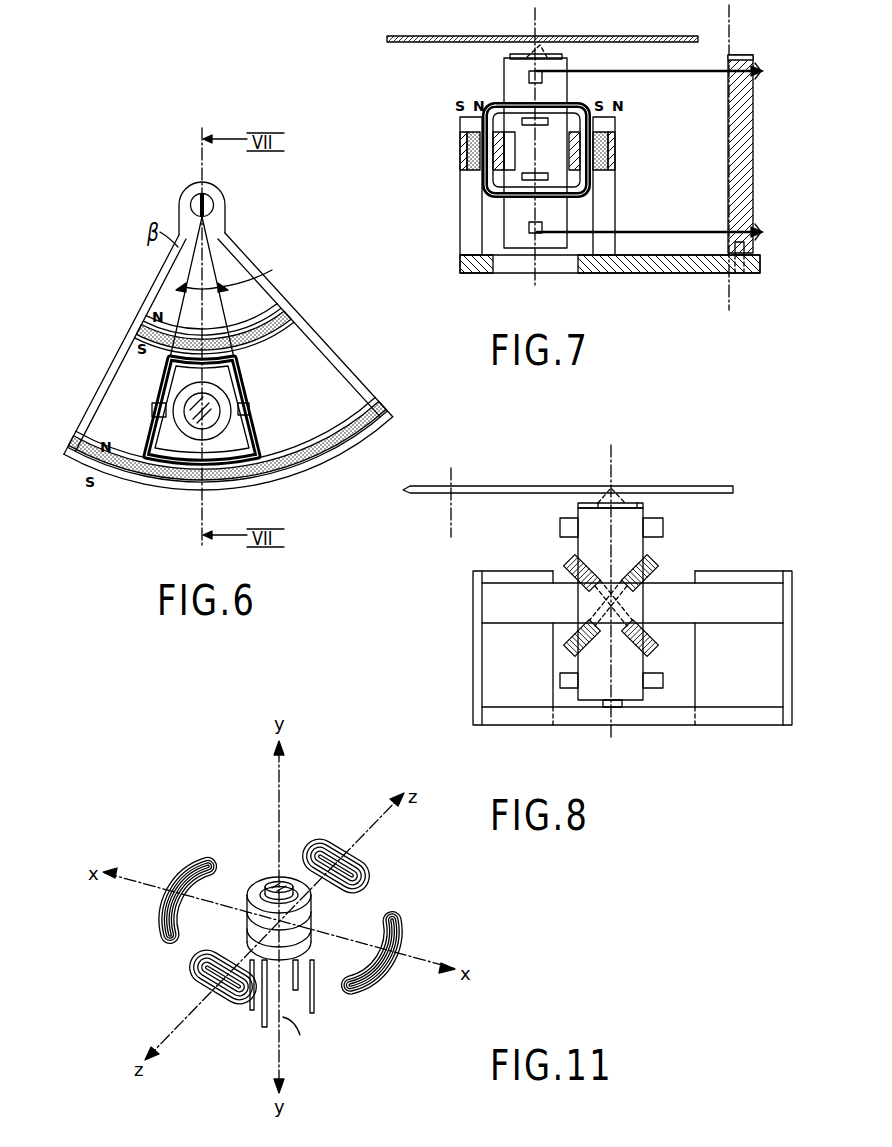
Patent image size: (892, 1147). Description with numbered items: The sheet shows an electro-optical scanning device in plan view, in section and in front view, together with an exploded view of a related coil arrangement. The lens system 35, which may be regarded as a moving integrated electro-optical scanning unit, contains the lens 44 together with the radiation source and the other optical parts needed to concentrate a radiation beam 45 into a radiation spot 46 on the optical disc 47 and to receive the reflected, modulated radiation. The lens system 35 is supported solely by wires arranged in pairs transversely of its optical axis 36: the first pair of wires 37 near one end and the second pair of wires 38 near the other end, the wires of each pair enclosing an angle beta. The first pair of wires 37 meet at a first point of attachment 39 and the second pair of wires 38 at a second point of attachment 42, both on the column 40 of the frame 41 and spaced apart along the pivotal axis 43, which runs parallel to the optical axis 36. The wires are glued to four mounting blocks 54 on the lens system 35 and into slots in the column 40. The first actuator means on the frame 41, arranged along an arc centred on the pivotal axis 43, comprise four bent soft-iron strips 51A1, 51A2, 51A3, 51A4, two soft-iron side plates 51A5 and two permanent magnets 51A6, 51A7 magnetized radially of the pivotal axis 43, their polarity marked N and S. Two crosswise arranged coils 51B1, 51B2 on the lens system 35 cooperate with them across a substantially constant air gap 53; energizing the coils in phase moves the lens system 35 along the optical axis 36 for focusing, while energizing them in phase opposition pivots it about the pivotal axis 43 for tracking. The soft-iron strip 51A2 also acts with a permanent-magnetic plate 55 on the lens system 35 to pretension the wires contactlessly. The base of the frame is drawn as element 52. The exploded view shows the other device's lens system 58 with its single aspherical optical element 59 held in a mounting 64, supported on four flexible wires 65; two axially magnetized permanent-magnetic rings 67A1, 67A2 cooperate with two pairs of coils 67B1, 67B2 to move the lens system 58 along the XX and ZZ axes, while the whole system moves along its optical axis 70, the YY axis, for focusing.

In FIG. 6, the lens system 35 is at (244, 466).
In FIG. 7, the lens system 35 is at (513, 71).
In FIG. 8, the lens system 35 is at (600, 543).
In FIG. 7, the optical axis 36 is at (540, 19).
In FIG. 8, the optical axis 36 is at (611, 458).
In FIG. 6, the first pair of wires 37 is at (253, 279).
In FIG. 7, the first pair of wires 37 is at (668, 76).
In FIG. 7, the second pair of wires 38 is at (657, 230).
In FIG. 6, the first point of attachment 39 is at (207, 221).
In FIG. 7, the first point of attachment 39 is at (729, 77).
In FIG. 6, the column 40 is at (208, 200).
In FIG. 7, the column 40 is at (744, 141).
In FIG. 8, the column 40 is at (608, 708).
In FIG. 6, the frame 41 is at (140, 299).
In FIG. 7, the frame 41 is at (749, 281).
In FIG. 8, the frame 41 is at (508, 733).
In FIG. 7, the second point of attachment 42 is at (728, 231).
In FIG. 7, the pivotal axis 43 is at (729, 14).
In FIG. 6, the lens 44 is at (217, 398).
In FIG. 7, the radiation beam 45 is at (548, 51).
In FIG. 8, the radiation beam 45 is at (622, 503).
In FIG. 7, the radiation spot 46 is at (540, 45).
In FIG. 8, the radiation spot 46 is at (612, 487).
In FIG. 7, the optical disc 47 is at (431, 36).
In FIG. 8, the optical disc 47 is at (708, 486).
In FIG. 6, the bent soft-iron strip 51A1 is at (290, 476).
In FIG. 7, the bent soft-iron strip 51A1 is at (493, 159).
In FIG. 8, the bent soft-iron strip 51A1 is at (740, 614).
In FIG. 6, the bent soft-iron strip 51A2 is at (320, 458).
In FIG. 7, the bent soft-iron strip 51A2 is at (480, 168).
In FIG. 6, the bent soft-iron strip 51A3 is at (306, 341).
In FIG. 7, the bent soft-iron strip 51A3 is at (612, 154).
In FIG. 6, the bent soft-iron strip 51A4 is at (272, 313).
In FIG. 7, the bent soft-iron strip 51A4 is at (610, 147).
In FIG. 6, the soft-iron side plate 51A5 is at (118, 392).
In FIG. 7, the soft-iron side plate 51A5 is at (480, 238).
In FIG. 8, the soft-iron side plate 51A5 is at (497, 680).
In FIG. 6, the permanent magnet 51A6 is at (358, 428).
In FIG. 7, the permanent magnet 51A6 is at (462, 138).
In FIG. 6, the permanent magnet 51A7 is at (300, 332).
In FIG. 6, the coil 51B1 is at (161, 414).
In FIG. 7, the coil 51B1 is at (497, 200).
In FIG. 8, the coil 51B1 is at (573, 570).
In FIG. 6, the coil 51B2 is at (248, 431).
In FIG. 7, the coil 51B2 is at (572, 107).
In FIG. 8, the coil 51B2 is at (650, 570).
In FIG. 6, the base body 52 is at (172, 287).
In FIG. 7, the base body 52 is at (667, 268).
In FIG. 8, the base body 52 is at (658, 716).
In FIG. 6, the air gap 53 is at (284, 356).
In FIG. 7, the air gap 53 is at (497, 167).
In FIG. 6, the mounting block 54 is at (251, 406).
In FIG. 7, the mounting block 54 is at (528, 78).
In FIG. 8, the mounting block 54 is at (563, 521).
In FIG. 6, the permanent-magnetic plate 55 is at (190, 440).
In FIG. 7, the permanent-magnetic plate 55 is at (514, 152).
In FIG. 11, the lens system 58 is at (261, 863).
In FIG. 11, the optical element 59 is at (282, 886).
In FIG. 11, the mounting 64 is at (305, 1015).
In FIG. 11, the flexible wire 65 is at (262, 1017).
In FIG. 11, the permanent-magnetic ring 67A1 is at (305, 912).
In FIG. 11, the permanent-magnetic ring 67A2 is at (305, 938).
In FIG. 11, the pair of coils 67B1 is at (201, 862).
In FIG. 11, the pair of coils 67B2 is at (362, 856).
In FIG. 11, the optical axis 70 is at (291, 1030).